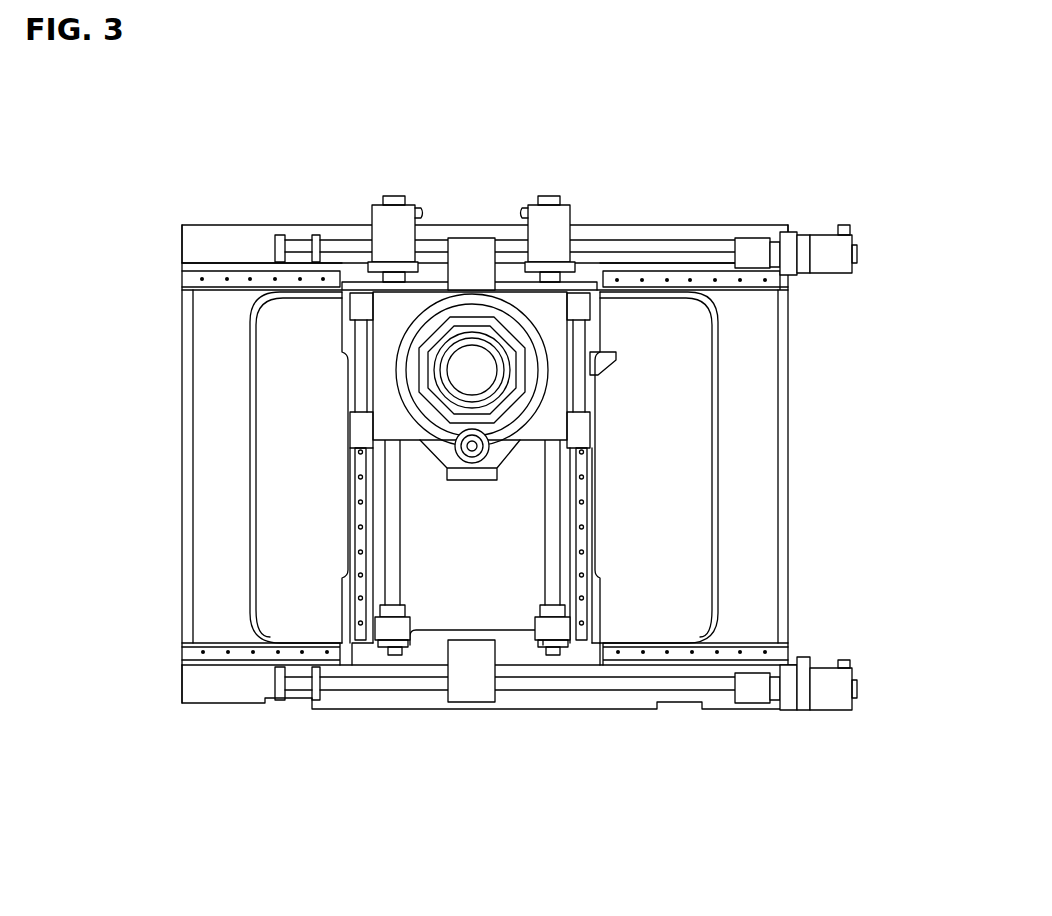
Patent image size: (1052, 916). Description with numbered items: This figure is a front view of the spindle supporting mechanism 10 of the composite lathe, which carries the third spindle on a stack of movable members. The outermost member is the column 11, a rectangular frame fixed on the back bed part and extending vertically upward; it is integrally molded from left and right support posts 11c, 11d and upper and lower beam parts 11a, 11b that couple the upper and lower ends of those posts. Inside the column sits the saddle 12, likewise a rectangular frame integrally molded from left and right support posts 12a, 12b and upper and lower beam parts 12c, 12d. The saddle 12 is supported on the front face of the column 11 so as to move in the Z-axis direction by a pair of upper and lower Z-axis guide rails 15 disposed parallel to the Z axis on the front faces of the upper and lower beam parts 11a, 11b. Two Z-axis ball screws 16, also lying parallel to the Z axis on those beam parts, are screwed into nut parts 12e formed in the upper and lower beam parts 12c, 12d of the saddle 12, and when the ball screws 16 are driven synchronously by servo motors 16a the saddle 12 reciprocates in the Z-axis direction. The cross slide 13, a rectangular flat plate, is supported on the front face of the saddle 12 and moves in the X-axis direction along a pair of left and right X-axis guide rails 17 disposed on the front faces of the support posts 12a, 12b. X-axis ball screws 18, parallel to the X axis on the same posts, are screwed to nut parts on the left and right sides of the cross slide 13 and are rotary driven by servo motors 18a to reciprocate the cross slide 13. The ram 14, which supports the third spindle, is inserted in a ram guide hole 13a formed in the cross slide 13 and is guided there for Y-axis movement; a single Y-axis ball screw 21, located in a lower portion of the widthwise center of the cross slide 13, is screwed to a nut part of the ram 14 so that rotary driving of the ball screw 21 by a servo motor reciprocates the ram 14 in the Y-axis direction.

The spindle supporting mechanism 10 is at (740, 197).
The column 11 is at (181, 286).
The upper beam part 11a is at (333, 225).
The lower beam part 11b is at (345, 712).
The left support post 11c is at (185, 483).
The right support post 11d is at (787, 480).
The saddle 12 is at (343, 468).
The left support post 12a is at (342, 545).
The right support post 12b is at (603, 553).
The upper beam part 12c is at (428, 275).
The lower beam part 12d is at (425, 655).
The nut part 12e is at (472, 238).
The cross slide 13 is at (417, 444).
The ram guide hole 13a is at (522, 372).
The ram 14 is at (418, 362).
The Z-axis guide rail 15 is at (682, 277).
The Z-axis ball screw 16 is at (647, 228).
The servo motor 16a is at (822, 232).
The X-axis guide rail 17 is at (355, 487).
The X-axis ball screw 18 is at (400, 522).
The servo motor 18a is at (373, 212).
The Y-axis ball screw 21 is at (472, 464).